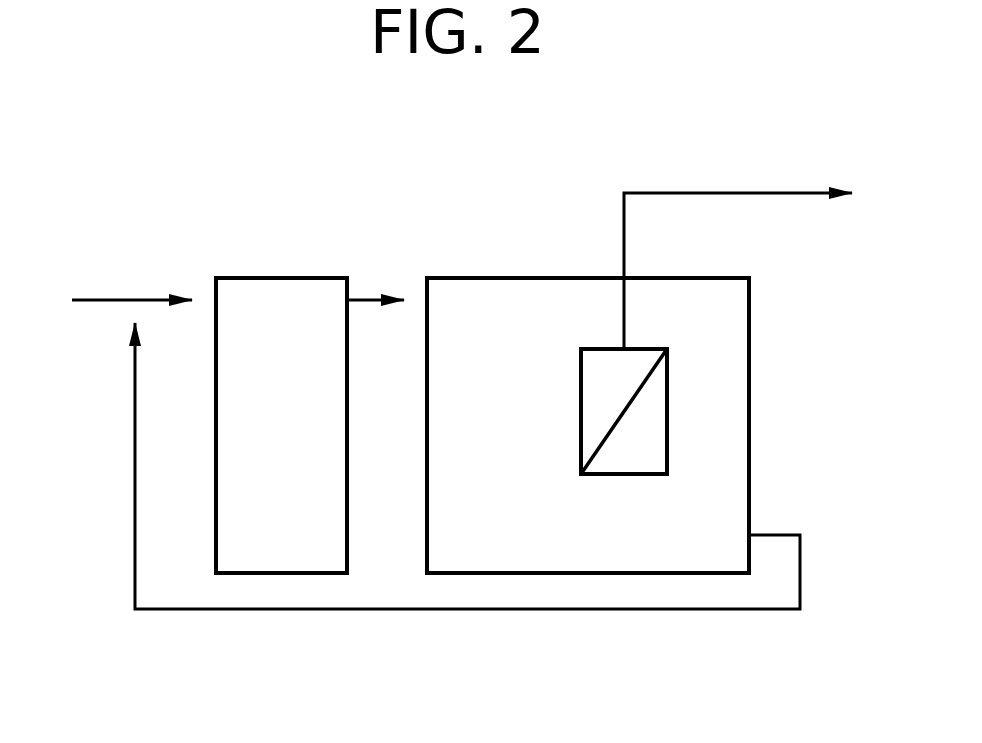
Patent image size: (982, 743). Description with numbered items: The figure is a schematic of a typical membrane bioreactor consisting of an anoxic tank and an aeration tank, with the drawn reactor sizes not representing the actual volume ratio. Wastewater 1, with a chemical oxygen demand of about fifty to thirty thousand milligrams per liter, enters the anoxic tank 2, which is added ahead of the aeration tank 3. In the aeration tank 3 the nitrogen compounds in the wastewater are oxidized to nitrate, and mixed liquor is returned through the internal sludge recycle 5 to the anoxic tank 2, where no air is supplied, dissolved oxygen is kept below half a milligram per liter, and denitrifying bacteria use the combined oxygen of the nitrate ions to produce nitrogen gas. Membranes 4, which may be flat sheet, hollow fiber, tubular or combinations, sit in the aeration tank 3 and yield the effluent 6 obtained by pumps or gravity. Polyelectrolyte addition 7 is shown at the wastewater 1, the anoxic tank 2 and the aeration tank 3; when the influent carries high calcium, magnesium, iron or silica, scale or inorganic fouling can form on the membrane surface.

The wastewater 1 is at (108, 298).
The anoxic tank 2 is at (289, 444).
The aeration tank 3 is at (520, 445).
The membranes 4 is at (648, 430).
The internal sludge recycle 5 is at (135, 399).
The effluent 6 is at (732, 193).
The polyelectrolyte addition 7 is at (456, 257).